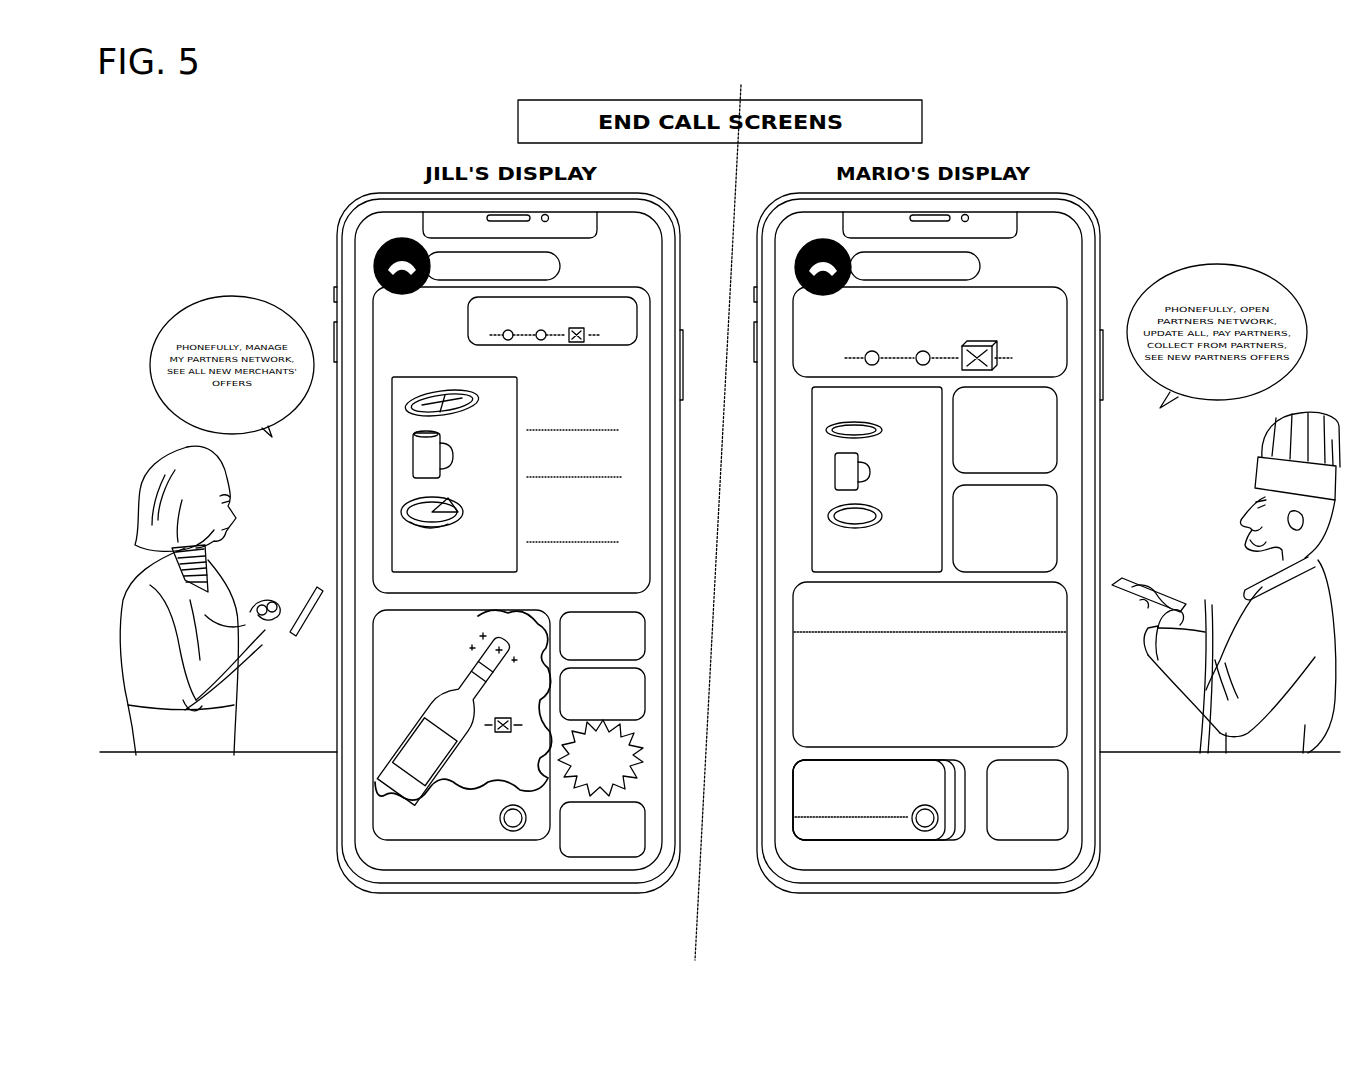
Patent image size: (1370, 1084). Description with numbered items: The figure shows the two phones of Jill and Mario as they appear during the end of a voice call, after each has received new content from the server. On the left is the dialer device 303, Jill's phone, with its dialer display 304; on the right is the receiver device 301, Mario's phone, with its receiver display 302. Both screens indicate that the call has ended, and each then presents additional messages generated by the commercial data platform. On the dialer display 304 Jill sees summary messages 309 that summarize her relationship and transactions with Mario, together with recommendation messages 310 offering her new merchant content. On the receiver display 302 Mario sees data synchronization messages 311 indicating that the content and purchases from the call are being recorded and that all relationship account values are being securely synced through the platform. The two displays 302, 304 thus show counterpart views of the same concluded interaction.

The receiver device 301 is at (1071, 180).
The receiver display 302 is at (1057, 276).
The dialer device 303 is at (399, 180).
The dialer display 304 is at (637, 276).
The summary messages 309 is at (401, 319).
The recommendation messages 310 is at (386, 656).
The data synchronization messages 311 is at (1046, 306).